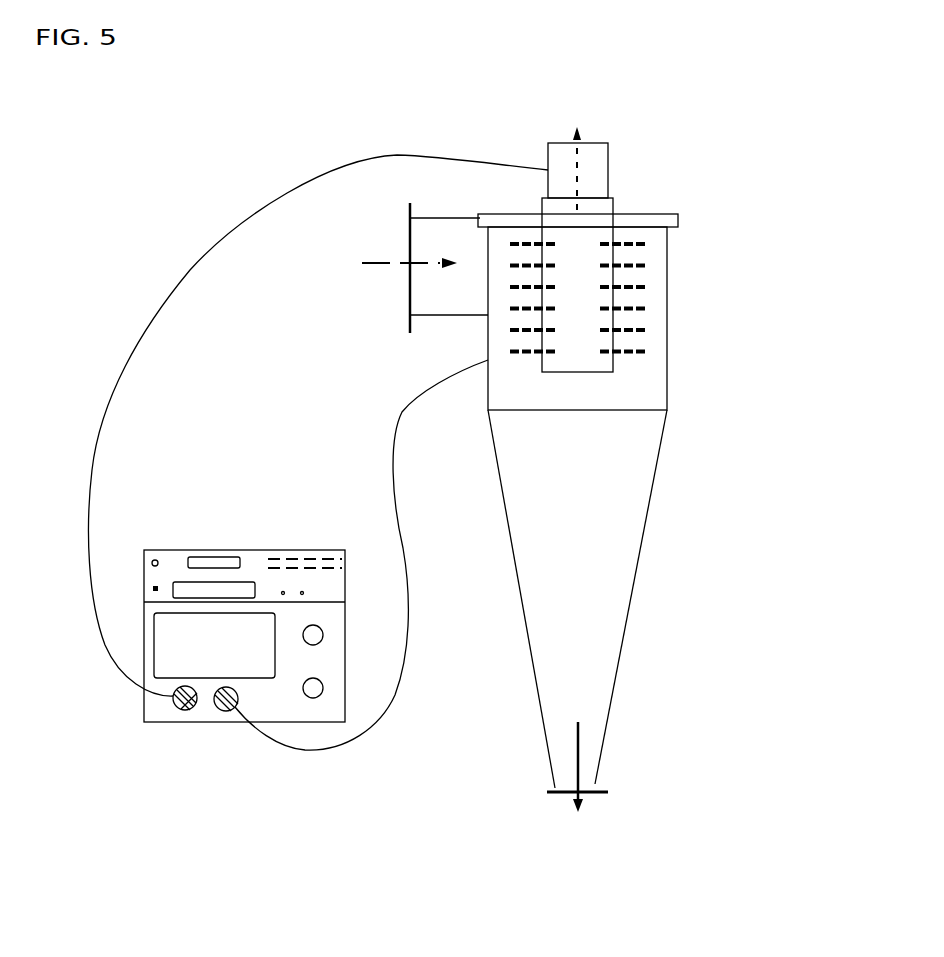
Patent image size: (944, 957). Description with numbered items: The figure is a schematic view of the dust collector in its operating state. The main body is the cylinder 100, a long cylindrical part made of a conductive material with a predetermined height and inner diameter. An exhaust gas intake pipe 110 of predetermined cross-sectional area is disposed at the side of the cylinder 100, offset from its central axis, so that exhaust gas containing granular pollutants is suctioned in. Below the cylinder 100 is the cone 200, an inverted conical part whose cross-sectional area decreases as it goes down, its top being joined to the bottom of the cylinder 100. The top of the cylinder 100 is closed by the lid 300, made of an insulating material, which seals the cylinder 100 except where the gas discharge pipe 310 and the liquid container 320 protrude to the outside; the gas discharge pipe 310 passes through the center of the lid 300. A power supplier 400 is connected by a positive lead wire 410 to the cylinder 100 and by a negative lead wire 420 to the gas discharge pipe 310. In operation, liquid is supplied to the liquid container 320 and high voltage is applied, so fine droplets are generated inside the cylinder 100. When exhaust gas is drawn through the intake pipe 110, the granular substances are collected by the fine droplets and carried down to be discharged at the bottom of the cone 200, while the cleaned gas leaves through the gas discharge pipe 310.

The cylinder 100 is at (667, 313).
The exhaust gas intake pipe 110 is at (442, 316).
The cone 200 is at (628, 620).
The lid 300 is at (676, 217).
The gas discharge pipe 310 is at (608, 170).
The liquid container 320 is at (542, 210).
The power supplier 400 is at (245, 550).
The positive lead wire 410 is at (408, 415).
The negative lead wire 420 is at (387, 156).